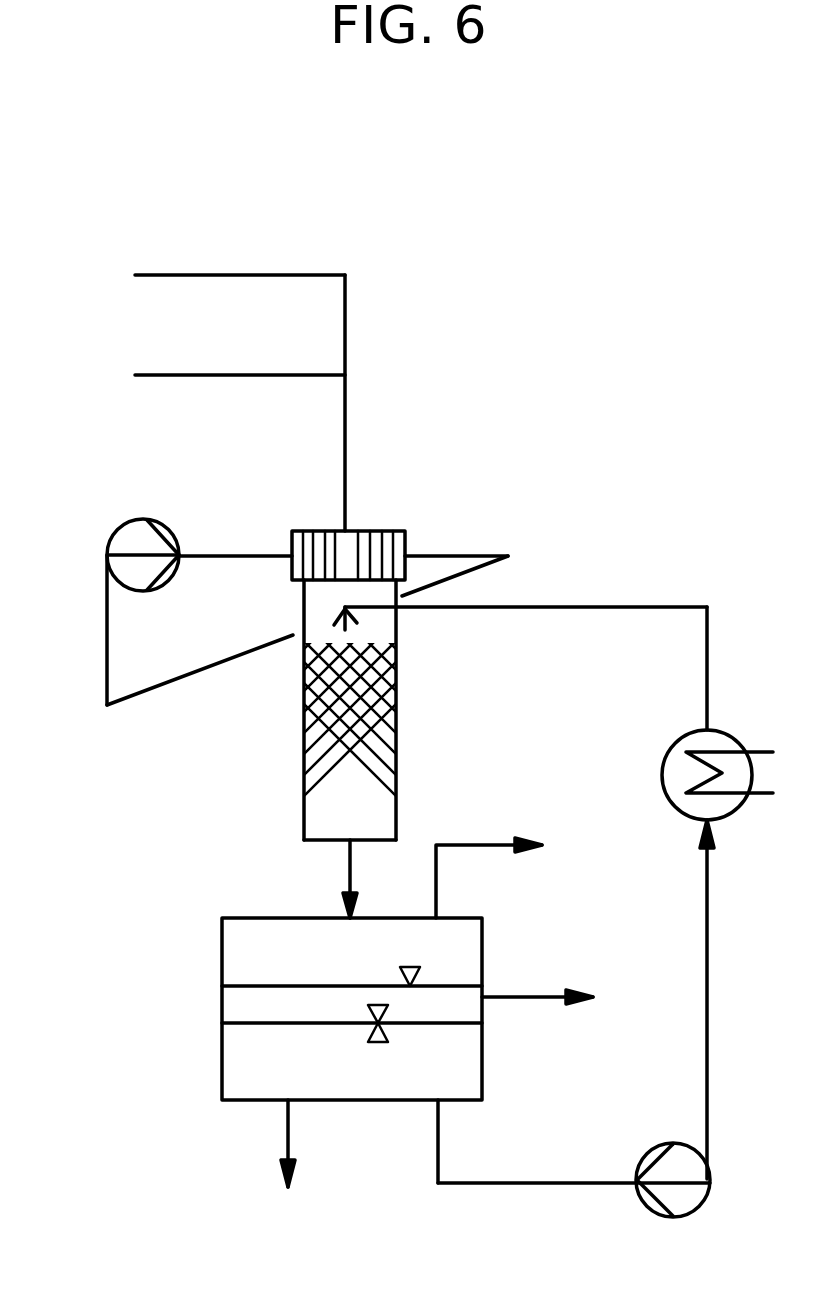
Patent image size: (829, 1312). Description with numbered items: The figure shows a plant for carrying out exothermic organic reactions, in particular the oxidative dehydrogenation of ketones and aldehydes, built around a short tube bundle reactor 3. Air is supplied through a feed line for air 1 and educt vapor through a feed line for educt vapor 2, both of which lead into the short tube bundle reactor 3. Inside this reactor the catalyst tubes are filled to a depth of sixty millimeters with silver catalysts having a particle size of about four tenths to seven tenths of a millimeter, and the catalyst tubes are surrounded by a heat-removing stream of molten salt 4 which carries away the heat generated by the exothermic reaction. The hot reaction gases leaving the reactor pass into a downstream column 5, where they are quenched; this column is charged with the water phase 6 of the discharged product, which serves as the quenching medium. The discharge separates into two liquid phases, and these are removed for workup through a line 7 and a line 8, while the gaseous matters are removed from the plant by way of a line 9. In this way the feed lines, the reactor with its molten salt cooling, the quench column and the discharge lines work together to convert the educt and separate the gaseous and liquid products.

The feed line for air 1 is at (240, 255).
The feed line for educt vapor 2 is at (240, 355).
The short tube bundle reactor 3 is at (378, 540).
The molten salt stream 4 is at (143, 535).
The downstream column 5 is at (355, 740).
The water phase 6 is at (352, 1009).
The line 7 is at (290, 1166).
The line 8 is at (550, 1000).
The line 9 is at (504, 872).